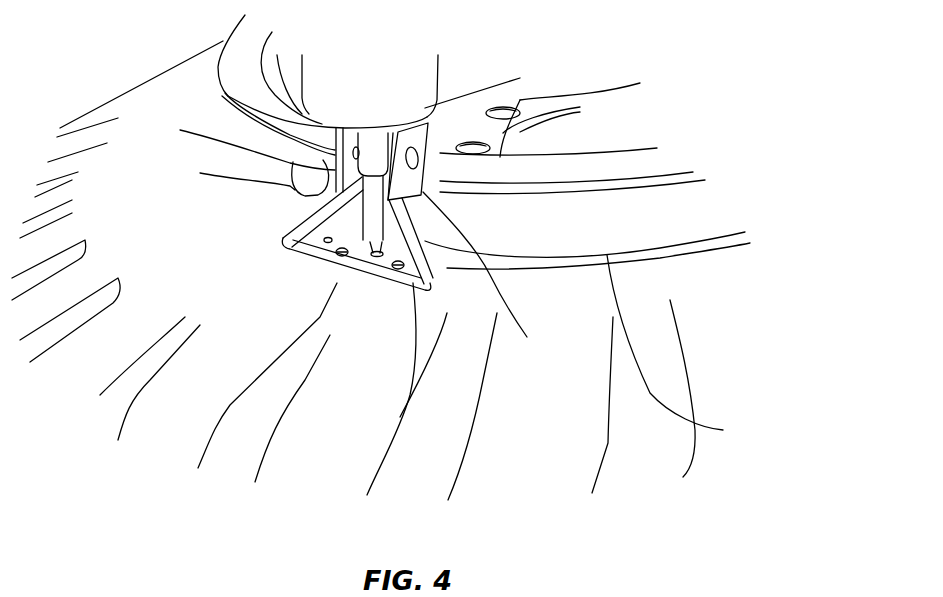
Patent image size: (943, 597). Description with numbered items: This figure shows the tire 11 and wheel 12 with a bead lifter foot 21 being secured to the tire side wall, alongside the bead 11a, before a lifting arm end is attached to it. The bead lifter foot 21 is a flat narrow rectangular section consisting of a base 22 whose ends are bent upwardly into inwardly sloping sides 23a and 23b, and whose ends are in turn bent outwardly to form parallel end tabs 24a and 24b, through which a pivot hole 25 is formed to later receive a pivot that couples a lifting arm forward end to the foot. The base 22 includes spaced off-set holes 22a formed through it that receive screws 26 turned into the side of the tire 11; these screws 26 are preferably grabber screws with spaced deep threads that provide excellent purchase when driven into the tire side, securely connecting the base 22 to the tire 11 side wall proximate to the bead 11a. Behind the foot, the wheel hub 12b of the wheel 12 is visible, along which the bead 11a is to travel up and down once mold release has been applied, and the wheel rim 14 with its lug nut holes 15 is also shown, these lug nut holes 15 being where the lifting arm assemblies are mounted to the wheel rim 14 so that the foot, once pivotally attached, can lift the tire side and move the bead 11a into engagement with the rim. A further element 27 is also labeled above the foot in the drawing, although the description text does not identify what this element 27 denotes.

The tire 11 is at (158, 231).
The bead 11a is at (723, 430).
The wheel 12 is at (583, 147).
The wheel hub 12b is at (582, 231).
The wheel rim 14 is at (495, 97).
The lug nut hole 15 is at (587, 144).
The bead lifter foot 21 is at (440, 171).
The base 22 is at (353, 272).
The off-set holes 22a is at (298, 247).
The inwardly sloping side 23a is at (477, 346).
The inwardly sloping side 23b is at (292, 192).
The end tab 24a is at (412, 183).
The end tab 24b is at (222, 92).
The pivot hole 25 is at (357, 152).
The screws 26 is at (342, 255).
The dome 27 is at (358, 99).